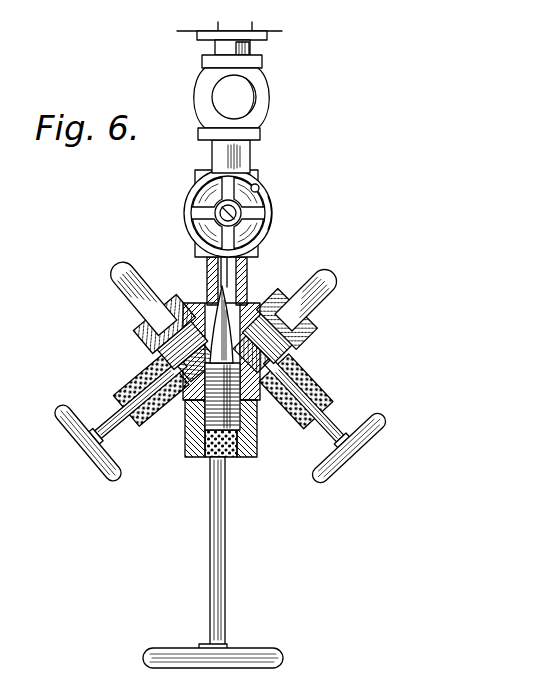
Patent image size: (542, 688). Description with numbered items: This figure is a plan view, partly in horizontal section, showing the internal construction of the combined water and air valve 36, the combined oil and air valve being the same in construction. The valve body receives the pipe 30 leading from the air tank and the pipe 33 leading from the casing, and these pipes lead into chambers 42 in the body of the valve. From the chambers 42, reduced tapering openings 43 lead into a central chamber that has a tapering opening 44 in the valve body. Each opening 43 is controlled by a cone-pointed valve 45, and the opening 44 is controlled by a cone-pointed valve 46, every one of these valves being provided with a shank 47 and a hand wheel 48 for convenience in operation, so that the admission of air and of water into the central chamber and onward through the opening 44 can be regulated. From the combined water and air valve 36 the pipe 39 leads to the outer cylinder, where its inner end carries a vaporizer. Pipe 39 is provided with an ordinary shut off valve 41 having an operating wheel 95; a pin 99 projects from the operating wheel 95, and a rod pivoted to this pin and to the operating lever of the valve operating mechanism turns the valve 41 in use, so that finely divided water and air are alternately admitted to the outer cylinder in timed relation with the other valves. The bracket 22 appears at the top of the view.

The mounting bracket 22 is at (268, 33).
The pipe 39 is at (247, 153).
The pin 99 is at (258, 186).
The operating wheel 95 is at (272, 204).
The shut off valve 41 is at (197, 200).
The pipe 30 is at (128, 268).
The pipe 33 is at (308, 298).
The combined water and air valve 36 is at (250, 303).
The reduced tapering openings 43 is at (208, 302).
The tapering opening 44 is at (236, 300).
The cone-pointed valve 45 is at (222, 388).
The cone-pointed valve 46 is at (222, 360).
The chambers 42 is at (150, 351).
The shanks 47 is at (125, 418).
The hand wheels 48 is at (98, 467).